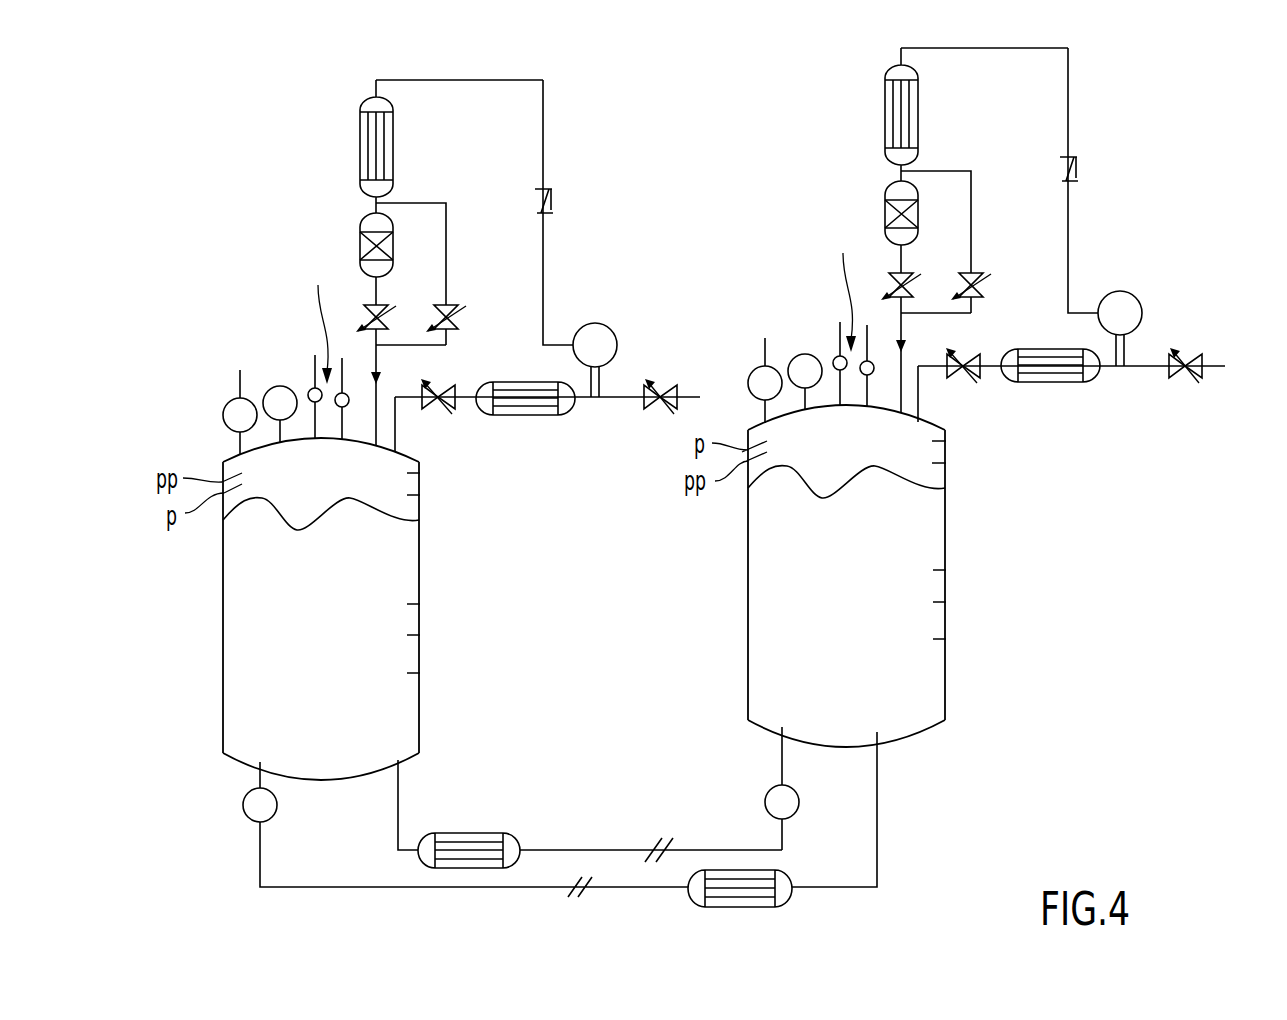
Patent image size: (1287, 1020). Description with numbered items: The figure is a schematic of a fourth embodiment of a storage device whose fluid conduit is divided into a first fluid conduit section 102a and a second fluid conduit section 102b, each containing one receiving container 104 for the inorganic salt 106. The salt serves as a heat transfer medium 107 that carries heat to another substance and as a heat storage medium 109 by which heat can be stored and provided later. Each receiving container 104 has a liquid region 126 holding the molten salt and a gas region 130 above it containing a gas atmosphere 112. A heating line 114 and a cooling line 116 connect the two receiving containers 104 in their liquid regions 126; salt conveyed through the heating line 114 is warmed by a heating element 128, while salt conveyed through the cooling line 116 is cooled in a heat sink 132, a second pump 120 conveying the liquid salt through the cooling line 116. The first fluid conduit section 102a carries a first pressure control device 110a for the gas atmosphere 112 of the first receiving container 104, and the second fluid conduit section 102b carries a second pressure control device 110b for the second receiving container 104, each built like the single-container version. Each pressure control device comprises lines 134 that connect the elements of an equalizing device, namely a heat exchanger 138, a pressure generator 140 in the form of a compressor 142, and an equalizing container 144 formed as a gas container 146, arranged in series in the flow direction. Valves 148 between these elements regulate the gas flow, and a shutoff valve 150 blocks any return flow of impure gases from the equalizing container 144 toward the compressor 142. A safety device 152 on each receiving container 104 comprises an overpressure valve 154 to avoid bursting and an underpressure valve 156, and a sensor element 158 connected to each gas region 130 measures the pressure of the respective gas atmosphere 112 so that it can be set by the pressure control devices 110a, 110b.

The first fluid conduit section 102a is at (568, 102).
The second fluid conduit section 102b is at (1098, 96).
The first open- and/or closed-loop pressure control device 110a is at (572, 124).
The second open- and/or closed-loop pressure control device 110b is at (1102, 116).
The receiving container 104 is at (420, 495).
The inorganic salt 106 is at (407, 635).
The heat transfer medium 107 is at (407, 604).
The heat storage medium 109 is at (407, 673).
The gas atmosphere 112 is at (420, 473).
The heating line 114 is at (708, 850).
The cooling line 116 is at (877, 827).
The second pump 120 is at (232, 400).
The liquid region 126 is at (388, 718).
The heating element 128 is at (470, 833).
The gas region 130 is at (400, 516).
The heat sink 132 is at (720, 907).
The lines 134 is at (543, 151).
The heat exchanger 138 is at (360, 131).
The pressure generator 140 is at (610, 330).
The compressor 142 is at (614, 356).
The equalizing container 144 is at (360, 222).
The gas container 146 is at (360, 247).
The valves 148 is at (395, 309).
The shutoff valve 150 is at (553, 193).
The safety device 152 is at (580, 303).
The overpressure valve 154 is at (309, 390).
The underpressure valve 156 is at (348, 410).
The sensor element 158 is at (284, 418).